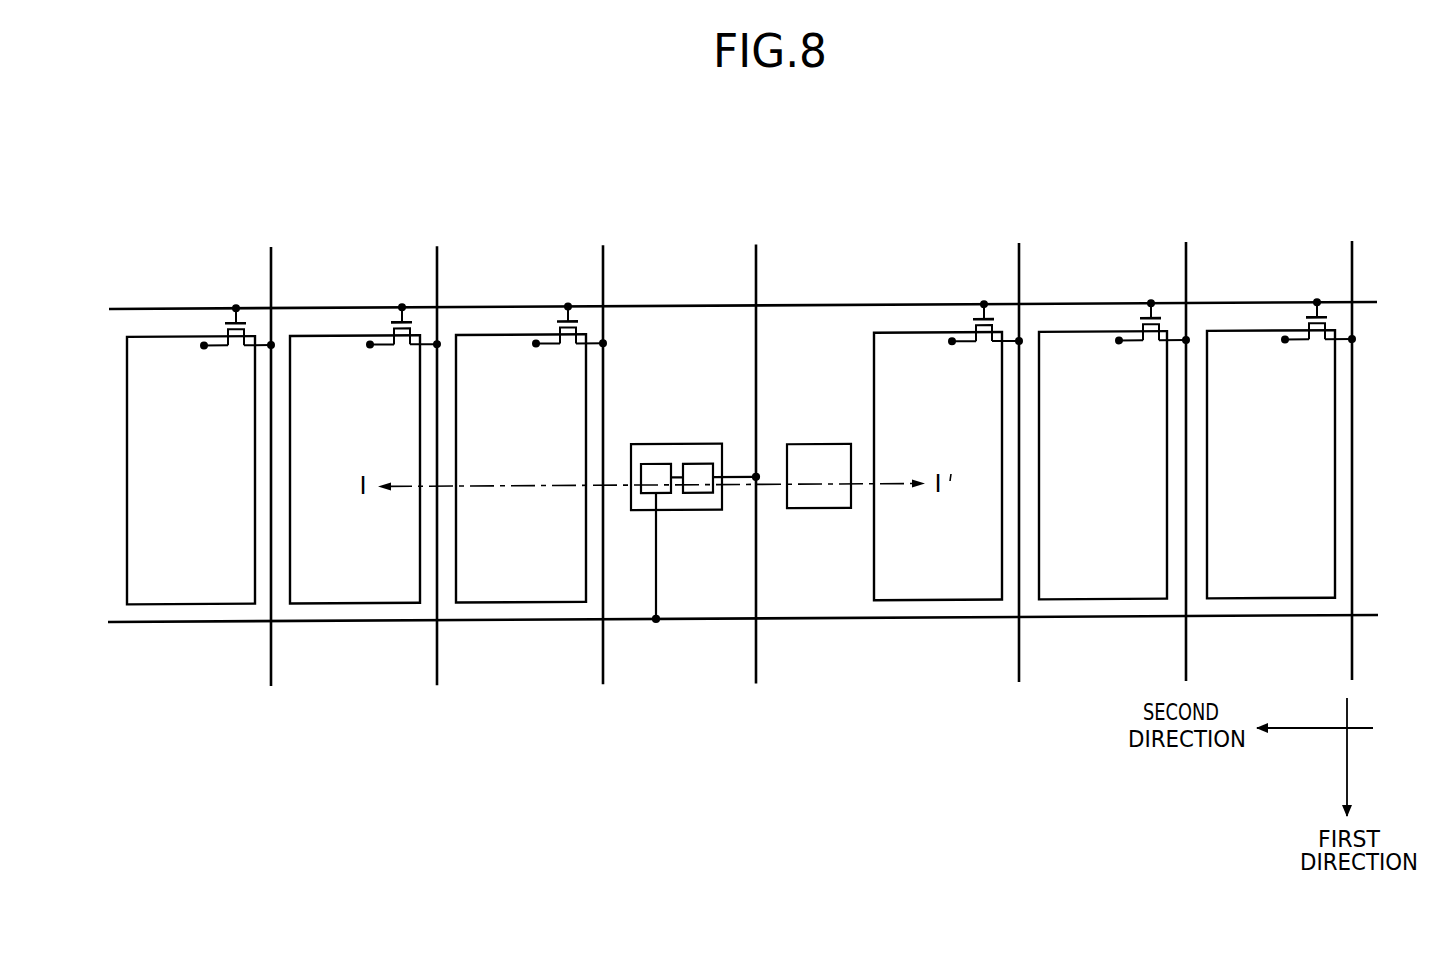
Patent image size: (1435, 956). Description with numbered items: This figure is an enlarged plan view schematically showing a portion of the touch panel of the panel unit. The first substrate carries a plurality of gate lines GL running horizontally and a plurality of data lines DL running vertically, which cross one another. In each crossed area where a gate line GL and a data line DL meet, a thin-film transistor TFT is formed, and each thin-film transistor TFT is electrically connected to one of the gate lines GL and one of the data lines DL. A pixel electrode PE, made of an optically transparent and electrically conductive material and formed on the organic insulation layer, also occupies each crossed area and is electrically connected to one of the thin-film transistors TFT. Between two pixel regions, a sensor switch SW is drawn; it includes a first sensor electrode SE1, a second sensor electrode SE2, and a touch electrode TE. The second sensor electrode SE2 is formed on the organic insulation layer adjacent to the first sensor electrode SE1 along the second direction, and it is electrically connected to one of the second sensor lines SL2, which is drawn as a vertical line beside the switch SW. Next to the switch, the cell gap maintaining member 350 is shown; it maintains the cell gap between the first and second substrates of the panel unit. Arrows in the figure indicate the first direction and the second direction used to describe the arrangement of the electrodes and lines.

The gate line GL is at (1093, 299).
The data line DL is at (1191, 258).
The second sensor line SL2 is at (766, 259).
The pixel electrode PE is at (528, 592).
The thin-film transistor TFT is at (549, 325).
The switch SW is at (740, 374).
The first sensor electrode SE1 is at (653, 464).
The touch electrode TE is at (674, 444).
The second sensor electrode SE2 is at (699, 464).
The cell gap maintaining member 350 is at (816, 444).